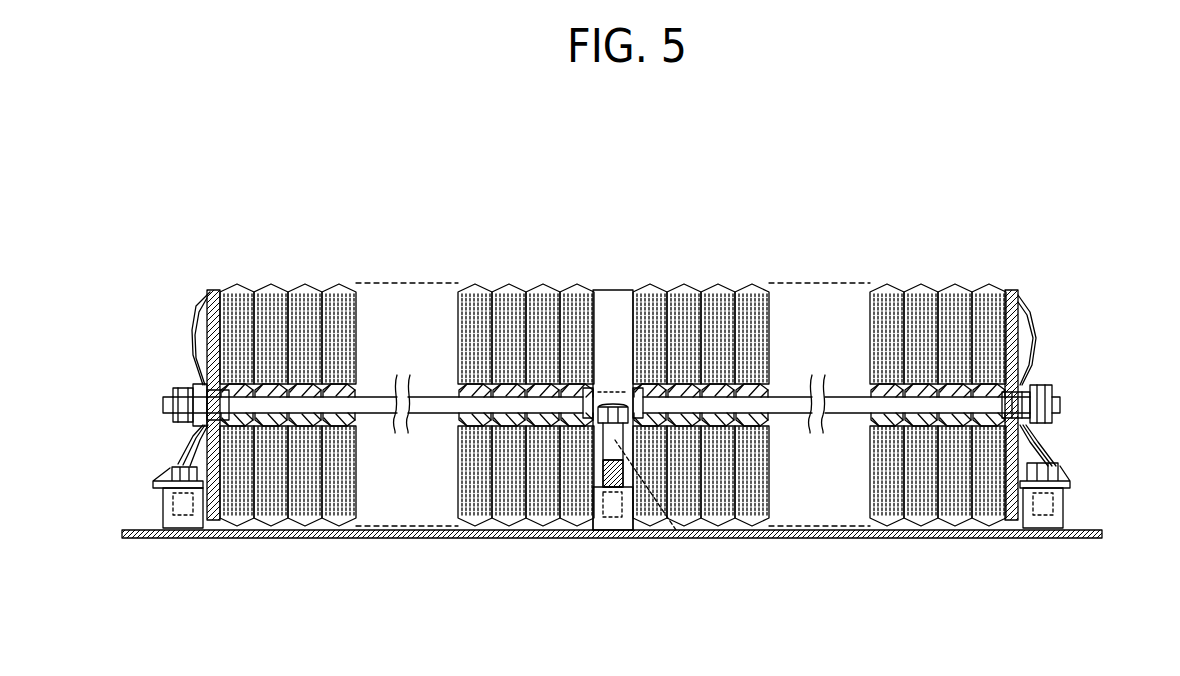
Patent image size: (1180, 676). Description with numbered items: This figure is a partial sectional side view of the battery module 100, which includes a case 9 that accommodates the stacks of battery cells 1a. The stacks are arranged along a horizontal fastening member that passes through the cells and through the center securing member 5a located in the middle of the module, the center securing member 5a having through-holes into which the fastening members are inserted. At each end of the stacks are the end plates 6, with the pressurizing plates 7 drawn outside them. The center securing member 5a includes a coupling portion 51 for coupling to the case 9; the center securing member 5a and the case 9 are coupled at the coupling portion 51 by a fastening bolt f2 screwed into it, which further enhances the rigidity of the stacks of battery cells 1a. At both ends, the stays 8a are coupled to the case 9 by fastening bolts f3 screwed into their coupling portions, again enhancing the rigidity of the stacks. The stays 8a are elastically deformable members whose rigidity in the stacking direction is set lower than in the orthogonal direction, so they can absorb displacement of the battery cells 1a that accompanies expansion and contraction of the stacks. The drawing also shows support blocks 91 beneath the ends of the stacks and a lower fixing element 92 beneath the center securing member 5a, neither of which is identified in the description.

The battery module 100 is at (878, 163).
The battery cells 1a is at (943, 262).
The center securing member 5a is at (606, 290).
The end plates 6 is at (1020, 306).
The pressurizing plates 7 is at (1036, 348).
The stays 8a is at (1042, 458).
The fastening bolts f3 is at (1058, 472).
The support block 91 is at (182, 528).
The case 9 is at (280, 542).
The coupling portion 51 is at (605, 397).
The fixing bolt 92 is at (607, 522).
The fastening bolt f2 is at (676, 530).